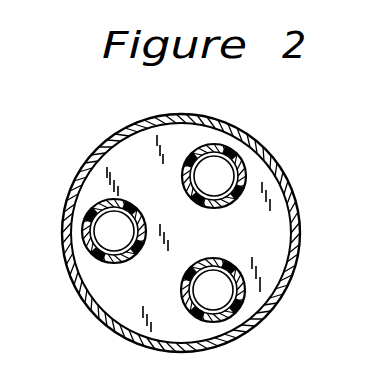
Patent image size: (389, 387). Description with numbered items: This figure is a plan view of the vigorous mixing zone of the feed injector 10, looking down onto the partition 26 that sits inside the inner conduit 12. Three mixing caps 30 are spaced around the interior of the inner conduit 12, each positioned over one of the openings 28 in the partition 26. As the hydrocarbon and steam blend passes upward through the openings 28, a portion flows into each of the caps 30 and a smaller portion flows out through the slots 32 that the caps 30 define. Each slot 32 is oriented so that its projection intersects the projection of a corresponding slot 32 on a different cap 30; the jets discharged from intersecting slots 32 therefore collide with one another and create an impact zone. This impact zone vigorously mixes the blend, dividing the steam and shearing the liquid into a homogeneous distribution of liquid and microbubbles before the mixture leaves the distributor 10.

The feed injector 10 is at (298, 203).
The inner conduit 12 is at (75, 185).
The partition 26 is at (267, 264).
The openings 28 is at (221, 292).
The mixing caps 30 is at (235, 152).
The slots 32 is at (188, 305).